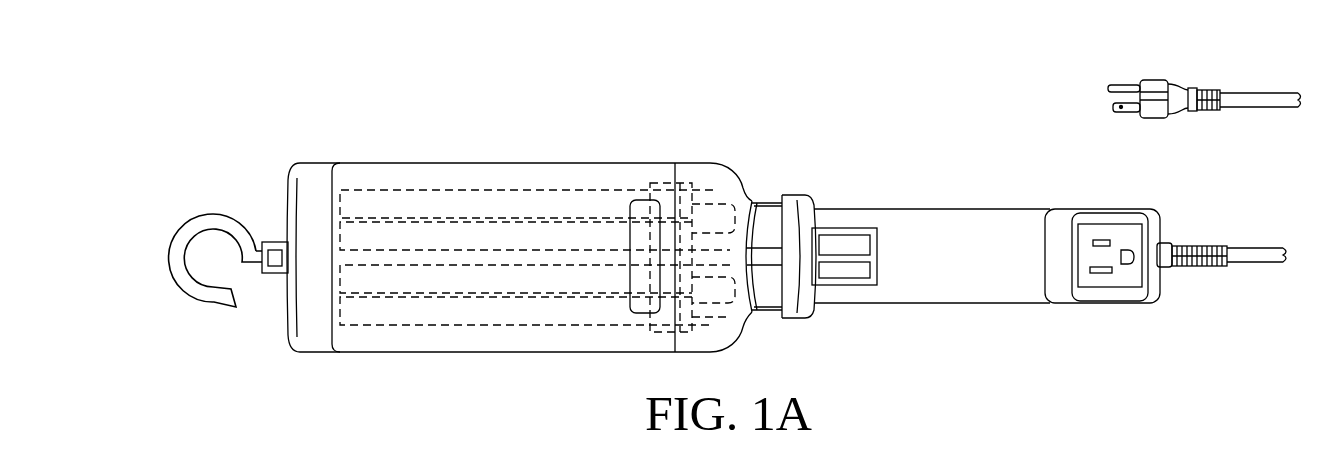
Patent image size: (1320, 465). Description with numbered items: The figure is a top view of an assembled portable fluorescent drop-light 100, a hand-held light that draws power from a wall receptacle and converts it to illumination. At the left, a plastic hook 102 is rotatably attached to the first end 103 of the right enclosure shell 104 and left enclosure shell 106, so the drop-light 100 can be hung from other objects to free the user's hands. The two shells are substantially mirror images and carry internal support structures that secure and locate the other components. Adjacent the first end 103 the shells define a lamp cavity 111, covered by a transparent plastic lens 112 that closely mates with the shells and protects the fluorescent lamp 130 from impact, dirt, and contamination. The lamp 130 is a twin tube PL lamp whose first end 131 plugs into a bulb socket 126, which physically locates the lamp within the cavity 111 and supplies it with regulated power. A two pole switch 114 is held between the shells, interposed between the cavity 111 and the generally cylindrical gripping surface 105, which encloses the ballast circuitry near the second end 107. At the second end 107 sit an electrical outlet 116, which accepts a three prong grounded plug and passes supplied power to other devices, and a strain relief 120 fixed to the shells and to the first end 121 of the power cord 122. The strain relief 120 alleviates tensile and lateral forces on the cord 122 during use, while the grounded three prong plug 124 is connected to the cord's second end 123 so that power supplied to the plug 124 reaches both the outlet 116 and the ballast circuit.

The portable fluorescent drop-light 100 is at (212, 116).
The hook 102 is at (172, 263).
The first end 103 is at (270, 294).
The right enclosure shell 104 is at (932, 248).
The gripping surface 105 is at (920, 240).
The left enclosure shell 106 is at (987, 303).
The second end 107 is at (1158, 301).
The lamp cavity 111 is at (372, 178).
The lens 112 is at (503, 170).
The switch 114 is at (858, 236).
The electrical outlet 116 is at (1125, 228).
The strain relief 120 is at (1205, 266).
The first end of the power cord 121 is at (1250, 247).
The power cord 122 is at (1285, 98).
The second end of the power cord 123 is at (1213, 112).
The plug 124 is at (1153, 84).
The bulb socket 126 is at (715, 200).
The fluorescent lamp 130 is at (578, 195).
The first end of the fluorescent lamps 131 is at (660, 178).